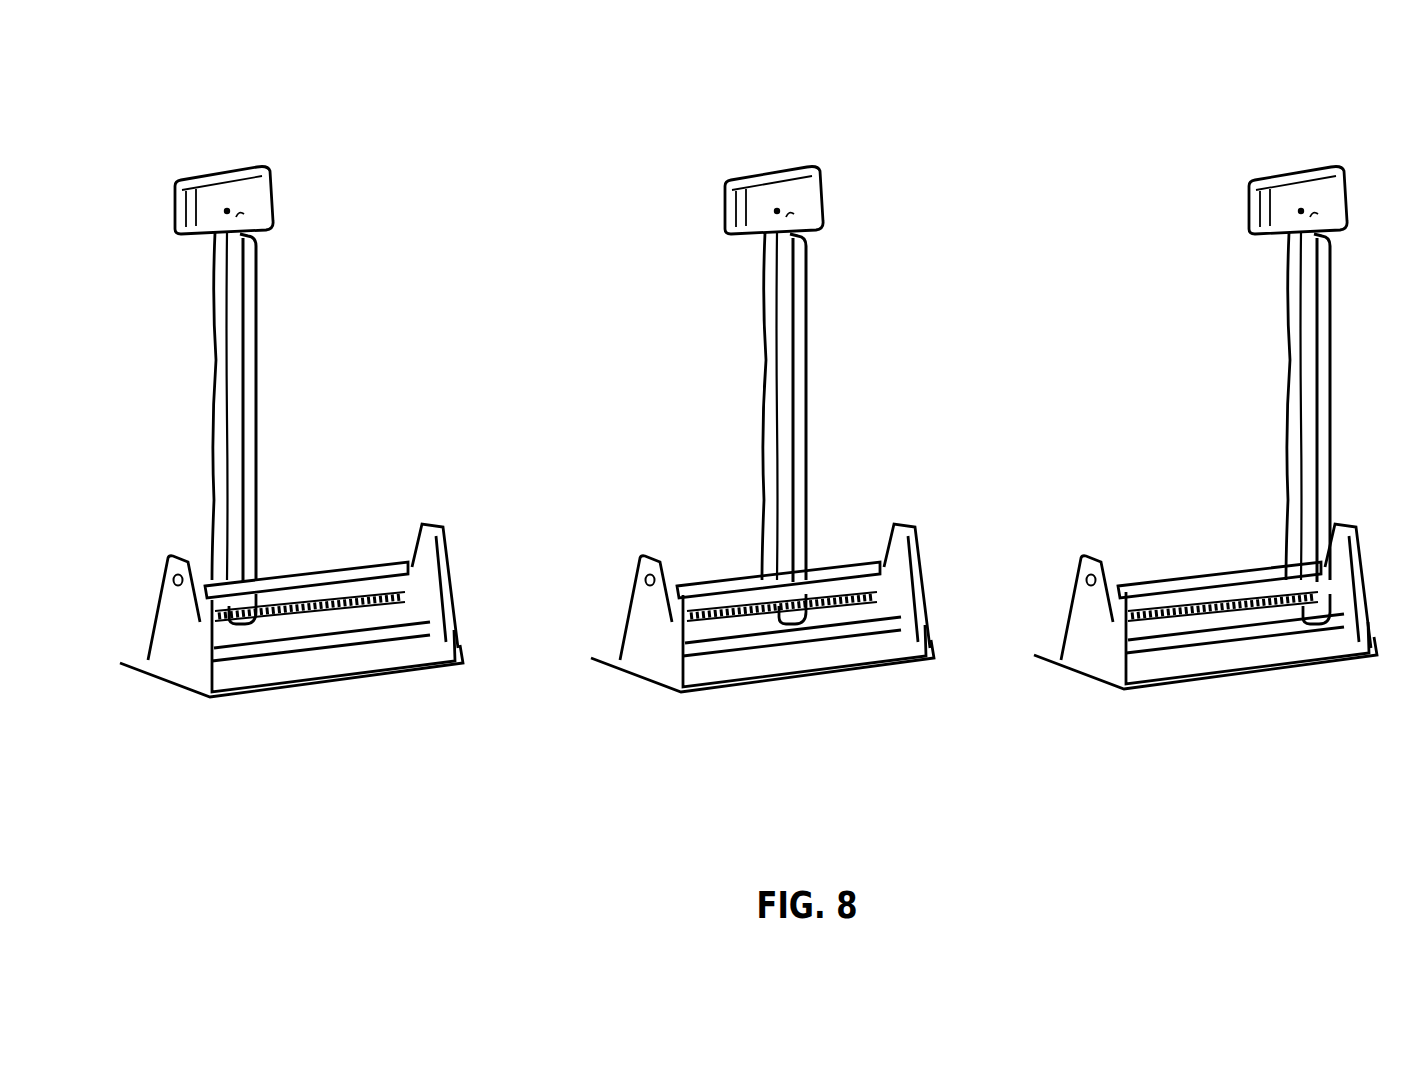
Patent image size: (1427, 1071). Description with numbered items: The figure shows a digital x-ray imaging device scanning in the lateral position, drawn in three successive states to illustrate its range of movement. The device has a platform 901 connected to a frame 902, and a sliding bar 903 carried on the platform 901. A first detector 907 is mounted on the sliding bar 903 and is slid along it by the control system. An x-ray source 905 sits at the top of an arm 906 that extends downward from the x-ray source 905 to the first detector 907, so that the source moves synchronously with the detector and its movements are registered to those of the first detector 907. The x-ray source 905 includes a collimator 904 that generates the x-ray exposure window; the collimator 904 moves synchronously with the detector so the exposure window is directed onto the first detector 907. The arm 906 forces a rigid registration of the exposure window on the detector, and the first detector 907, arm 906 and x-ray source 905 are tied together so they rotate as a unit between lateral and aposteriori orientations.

The platform 901 is at (337, 572).
The frame 902 is at (436, 622).
The sliding bar 903 is at (268, 615).
The collimator 904 is at (212, 236).
The x-ray source 905 is at (253, 188).
The arm 906 is at (249, 323).
The first detector 907 is at (236, 632).